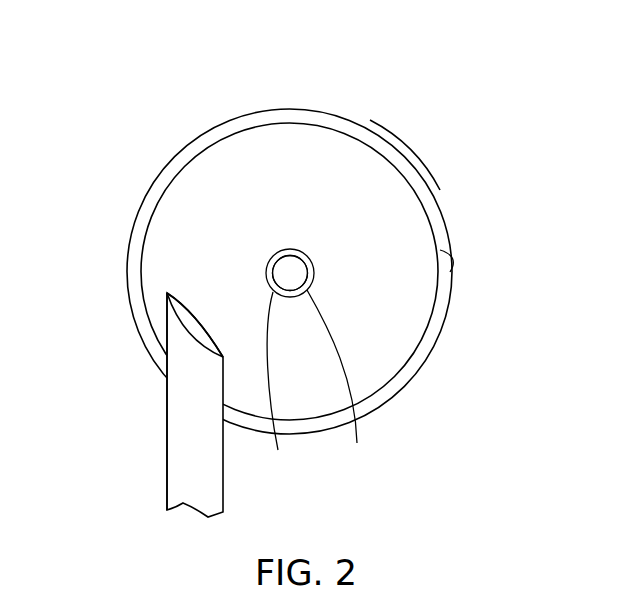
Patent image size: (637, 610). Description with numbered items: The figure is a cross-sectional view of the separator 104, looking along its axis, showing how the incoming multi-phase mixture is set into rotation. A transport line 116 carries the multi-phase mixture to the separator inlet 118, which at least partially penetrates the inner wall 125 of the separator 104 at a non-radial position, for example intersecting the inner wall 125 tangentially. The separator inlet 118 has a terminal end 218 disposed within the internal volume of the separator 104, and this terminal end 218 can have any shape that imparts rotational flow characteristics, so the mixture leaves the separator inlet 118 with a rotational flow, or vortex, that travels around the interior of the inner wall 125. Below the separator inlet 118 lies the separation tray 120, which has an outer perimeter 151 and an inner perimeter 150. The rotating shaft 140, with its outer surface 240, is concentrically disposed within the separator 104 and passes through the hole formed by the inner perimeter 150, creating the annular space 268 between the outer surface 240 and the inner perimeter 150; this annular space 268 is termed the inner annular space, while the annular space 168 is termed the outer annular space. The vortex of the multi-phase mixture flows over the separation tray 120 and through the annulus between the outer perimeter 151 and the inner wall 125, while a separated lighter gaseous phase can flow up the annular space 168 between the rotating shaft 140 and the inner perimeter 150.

The separator 104 is at (177, 157).
The transport line 116 is at (134, 390).
The separator inlet 118 is at (167, 328).
The separation tray 120 is at (286, 270).
The inner wall 125 is at (453, 272).
The rotating shaft 140 is at (295, 272).
The inner perimeter 150 is at (277, 390).
The outer perimeter 151 is at (400, 170).
The annular space 168 is at (158, 198).
The terminal end 218 is at (167, 293).
The outer surface 240 is at (341, 384).
The annular space 268 is at (290, 252).